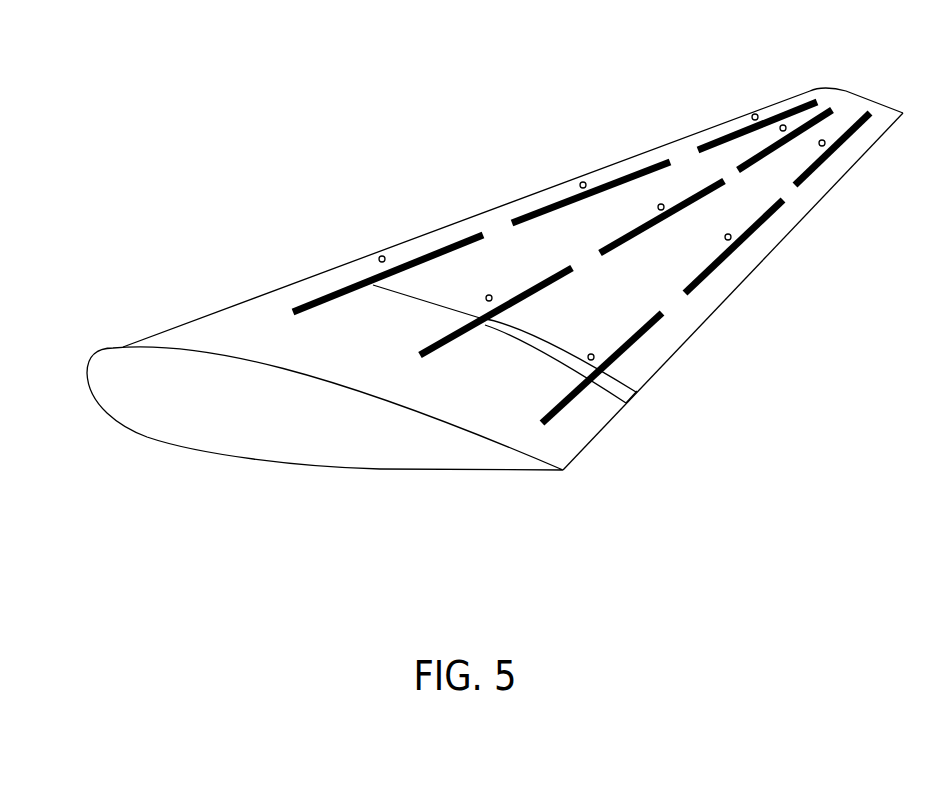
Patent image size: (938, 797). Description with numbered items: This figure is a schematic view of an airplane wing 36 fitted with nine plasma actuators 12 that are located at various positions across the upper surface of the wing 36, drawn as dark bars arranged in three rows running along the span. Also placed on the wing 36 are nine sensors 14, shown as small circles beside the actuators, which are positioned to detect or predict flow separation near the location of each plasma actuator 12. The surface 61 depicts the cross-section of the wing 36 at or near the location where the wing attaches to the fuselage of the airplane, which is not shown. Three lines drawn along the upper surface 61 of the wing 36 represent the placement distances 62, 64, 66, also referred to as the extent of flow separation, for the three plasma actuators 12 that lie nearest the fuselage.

The plasma actuator 12 is at (803, 102).
The sensor 14 is at (380, 256).
The wing 36 is at (497, 230).
The upper surface 61 is at (618, 210).
The placement distance 62 is at (412, 295).
The placement distance 64 is at (550, 342).
The placement distance 66 is at (638, 389).